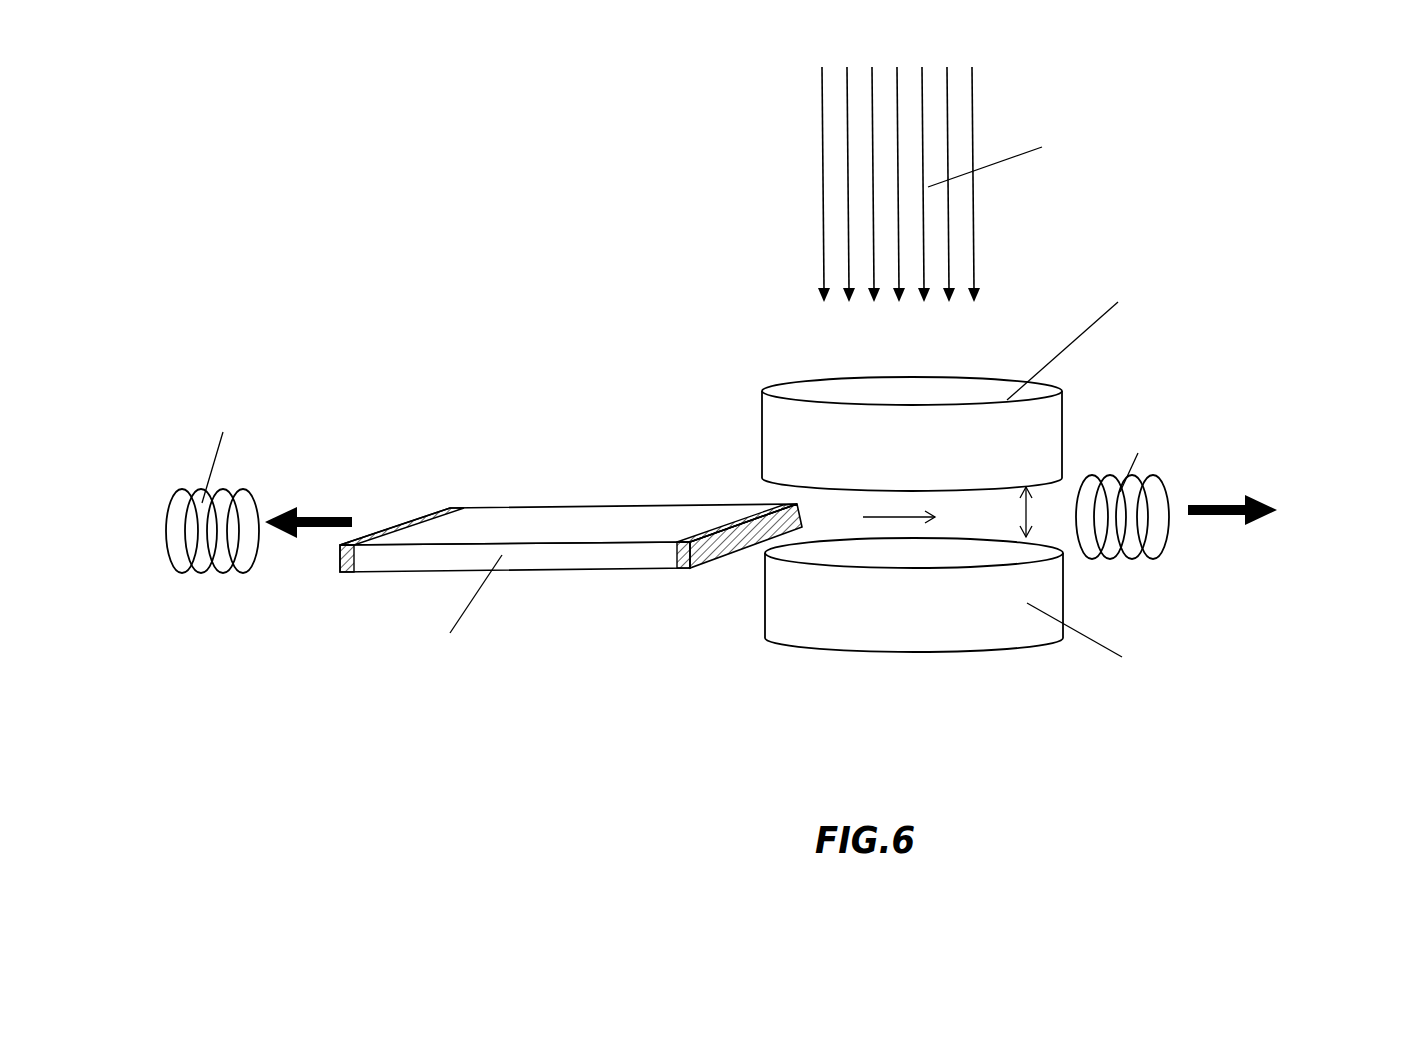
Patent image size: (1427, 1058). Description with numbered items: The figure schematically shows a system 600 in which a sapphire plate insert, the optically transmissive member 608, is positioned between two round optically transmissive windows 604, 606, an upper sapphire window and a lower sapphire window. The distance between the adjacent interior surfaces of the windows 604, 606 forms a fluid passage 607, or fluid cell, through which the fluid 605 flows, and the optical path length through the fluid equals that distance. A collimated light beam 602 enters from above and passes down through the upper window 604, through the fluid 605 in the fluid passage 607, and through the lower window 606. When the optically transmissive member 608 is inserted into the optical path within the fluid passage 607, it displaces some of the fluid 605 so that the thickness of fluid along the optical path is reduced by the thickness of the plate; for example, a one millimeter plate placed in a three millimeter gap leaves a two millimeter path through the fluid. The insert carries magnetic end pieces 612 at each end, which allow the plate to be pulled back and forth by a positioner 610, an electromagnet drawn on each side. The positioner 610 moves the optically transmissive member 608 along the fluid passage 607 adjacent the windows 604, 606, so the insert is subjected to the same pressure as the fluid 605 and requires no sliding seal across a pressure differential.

The system 600 is at (440, 268).
The light beam 602 is at (823, 247).
The optically transmissive window 604 is at (795, 427).
The fluid 605 is at (911, 516).
The optically transmissive window 606 is at (895, 623).
The fluid passage 607 is at (1028, 515).
The optically transmissive member 608 is at (541, 512).
The positioner 610 is at (242, 575).
The magnetic end pieces 612 is at (412, 517).